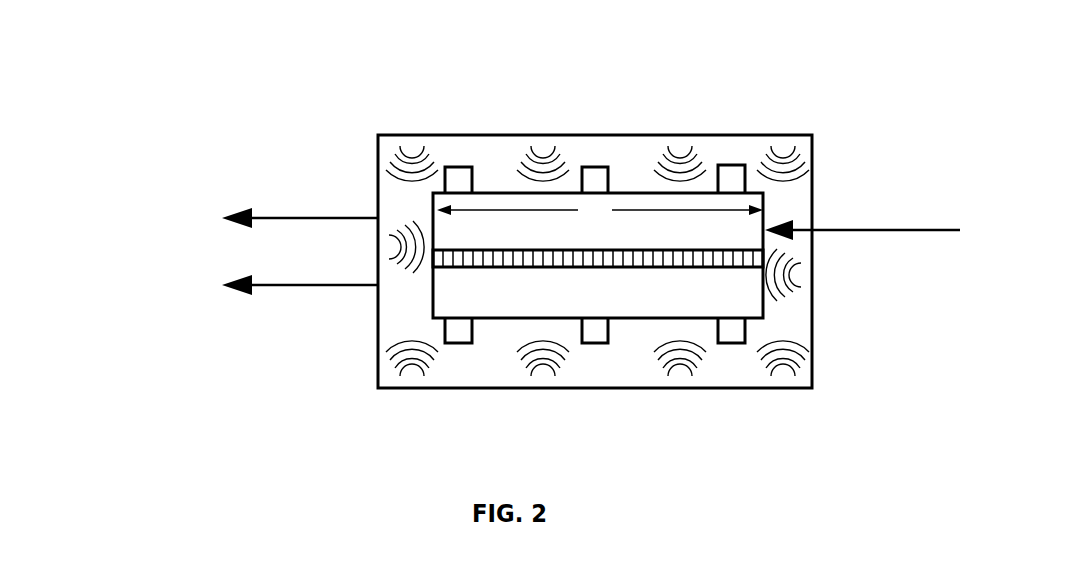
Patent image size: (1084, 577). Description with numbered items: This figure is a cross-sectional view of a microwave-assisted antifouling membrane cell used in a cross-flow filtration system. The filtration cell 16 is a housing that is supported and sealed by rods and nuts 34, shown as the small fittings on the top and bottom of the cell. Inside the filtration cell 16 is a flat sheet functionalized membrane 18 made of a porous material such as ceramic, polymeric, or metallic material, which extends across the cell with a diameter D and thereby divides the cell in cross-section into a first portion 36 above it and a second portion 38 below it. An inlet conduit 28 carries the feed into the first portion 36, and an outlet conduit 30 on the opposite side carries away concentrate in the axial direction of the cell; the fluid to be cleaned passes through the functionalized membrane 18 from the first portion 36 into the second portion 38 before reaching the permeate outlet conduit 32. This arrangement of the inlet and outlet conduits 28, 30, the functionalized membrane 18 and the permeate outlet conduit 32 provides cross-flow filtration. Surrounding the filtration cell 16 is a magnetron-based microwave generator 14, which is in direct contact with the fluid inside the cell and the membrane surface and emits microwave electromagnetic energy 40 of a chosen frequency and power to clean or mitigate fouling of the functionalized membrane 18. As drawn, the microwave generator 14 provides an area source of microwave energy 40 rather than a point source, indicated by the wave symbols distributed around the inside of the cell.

The microwave generator 14 is at (705, 134).
The filtration cell 16 is at (500, 193).
The functionalized membrane 18 is at (655, 267).
The inlet conduit 28 is at (862, 232).
The outlet conduit 30 is at (306, 218).
The permeate outlet conduit 32 is at (306, 286).
The rods and nuts 34 is at (458, 340).
The first portion 36 is at (598, 221).
The second portion 38 is at (598, 292).
The microwave electromagnetic energy 40 is at (781, 135).